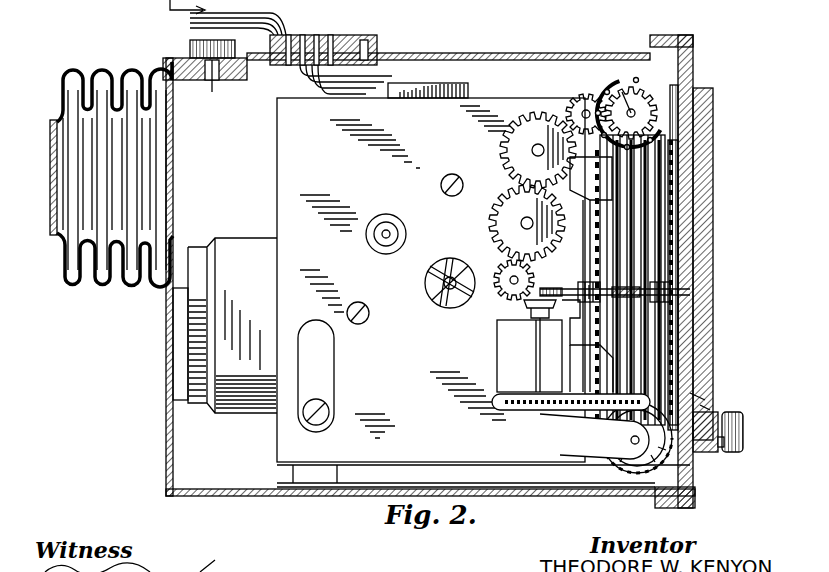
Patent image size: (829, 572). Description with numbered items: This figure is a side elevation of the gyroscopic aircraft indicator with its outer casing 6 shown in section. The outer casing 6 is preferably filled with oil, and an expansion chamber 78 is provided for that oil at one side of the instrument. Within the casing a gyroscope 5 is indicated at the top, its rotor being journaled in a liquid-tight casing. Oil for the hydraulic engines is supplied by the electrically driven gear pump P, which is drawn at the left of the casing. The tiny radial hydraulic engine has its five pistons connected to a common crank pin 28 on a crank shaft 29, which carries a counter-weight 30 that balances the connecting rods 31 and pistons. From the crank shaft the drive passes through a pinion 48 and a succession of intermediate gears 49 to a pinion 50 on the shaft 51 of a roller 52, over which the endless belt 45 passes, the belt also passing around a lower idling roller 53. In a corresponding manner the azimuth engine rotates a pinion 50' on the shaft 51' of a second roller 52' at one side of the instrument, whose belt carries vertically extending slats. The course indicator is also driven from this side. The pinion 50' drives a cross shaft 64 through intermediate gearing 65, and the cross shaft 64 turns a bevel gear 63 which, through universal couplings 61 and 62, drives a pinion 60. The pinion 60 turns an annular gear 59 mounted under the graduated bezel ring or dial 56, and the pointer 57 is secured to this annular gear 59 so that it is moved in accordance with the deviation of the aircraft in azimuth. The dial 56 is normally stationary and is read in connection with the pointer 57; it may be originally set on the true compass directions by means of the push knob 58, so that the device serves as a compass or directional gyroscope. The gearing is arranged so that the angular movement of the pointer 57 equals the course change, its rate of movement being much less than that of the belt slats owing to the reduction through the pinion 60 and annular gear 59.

The gyroscope 5 is at (462, 88).
The outer casing 6 is at (563, 53).
The gear pump P is at (232, 244).
The crank pin 28 is at (446, 307).
The crank shaft 29 is at (450, 260).
The counter-weight 30 is at (424, 279).
The connecting rods 31 is at (434, 304).
The endless belt 45 is at (668, 306).
The pinion 48 is at (503, 265).
The intermediate gears 49 is at (508, 182).
The pinion 50 is at (696, 239).
The pinion 50' is at (729, 381).
The shaft 51 is at (627, 104).
The shaft 51' is at (749, 386).
The roller 52 is at (635, 99).
The roller 52' is at (666, 280).
The idling roller 53 is at (672, 463).
The dial 56 is at (703, 130).
The pointer 57 is at (690, 153).
The push knob 58 is at (742, 418).
The annular gear 59 is at (678, 355).
The pinion 60 is at (680, 283).
The universal coupling 61 is at (652, 280).
The universal coupling 62 is at (580, 305).
The bevel gear 63 is at (540, 282).
The cross shaft 64 is at (536, 349).
The intermediate gearing 65 is at (580, 416).
The expansion chamber 78 is at (66, 248).